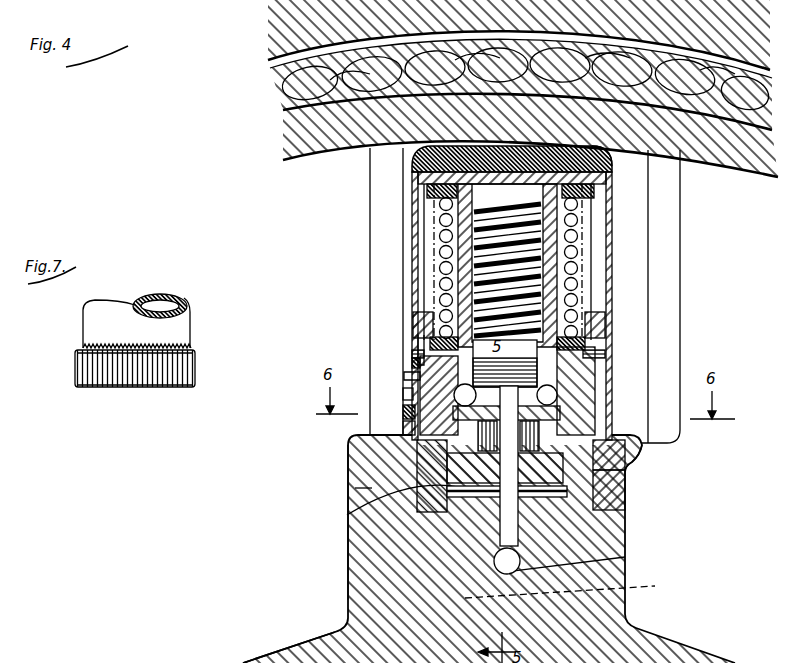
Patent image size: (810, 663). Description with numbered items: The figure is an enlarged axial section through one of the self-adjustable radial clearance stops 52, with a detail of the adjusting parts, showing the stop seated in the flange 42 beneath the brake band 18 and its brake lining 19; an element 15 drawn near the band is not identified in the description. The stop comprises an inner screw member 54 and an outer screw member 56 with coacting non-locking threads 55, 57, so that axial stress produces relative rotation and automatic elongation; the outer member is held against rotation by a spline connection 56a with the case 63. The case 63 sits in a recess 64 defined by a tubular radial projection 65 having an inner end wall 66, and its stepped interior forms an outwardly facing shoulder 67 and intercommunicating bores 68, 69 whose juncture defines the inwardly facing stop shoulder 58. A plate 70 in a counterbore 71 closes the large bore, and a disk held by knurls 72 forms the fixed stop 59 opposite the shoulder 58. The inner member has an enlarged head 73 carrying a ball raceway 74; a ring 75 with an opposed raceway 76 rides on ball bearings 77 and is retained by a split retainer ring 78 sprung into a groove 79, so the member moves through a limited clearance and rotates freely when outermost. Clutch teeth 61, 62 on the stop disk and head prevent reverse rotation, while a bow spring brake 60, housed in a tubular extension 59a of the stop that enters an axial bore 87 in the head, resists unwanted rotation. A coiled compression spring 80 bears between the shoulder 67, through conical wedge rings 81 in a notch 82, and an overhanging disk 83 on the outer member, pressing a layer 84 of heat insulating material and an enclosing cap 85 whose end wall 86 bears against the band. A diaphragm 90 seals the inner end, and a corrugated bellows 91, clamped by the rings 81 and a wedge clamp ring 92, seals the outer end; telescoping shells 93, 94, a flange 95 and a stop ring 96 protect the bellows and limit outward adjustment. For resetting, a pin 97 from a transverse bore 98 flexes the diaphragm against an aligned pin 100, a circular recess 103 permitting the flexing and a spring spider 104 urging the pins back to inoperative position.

In FIG. 4, the tire 15 is at (292, 22).
In FIG. 4, the brake band 18 is at (306, 136).
In FIG. 4, the brake lining 19 is at (317, 96).
In FIG. 4, the flange 42 is at (325, 640).
In FIG. 4, the radial clearance stop 52 is at (630, 257).
In FIG. 4, the inner screw member 54 is at (608, 362).
In FIG. 4, the non-locking thread 55 is at (580, 307).
In FIG. 4, the outer screw member 56 is at (607, 212).
In FIG. 4, the spline connection 56a is at (410, 345).
In FIG. 4, the non-locking thread 57 is at (593, 287).
In FIG. 4, the stop shoulder 58 is at (605, 376).
In FIG. 4, the stop 59 is at (420, 504).
In FIG. 7, the stop 59 is at (92, 390).
In FIG. 4, the tubular extension 59a is at (648, 462).
In FIG. 4, the brake 60 is at (412, 433).
In FIG. 7, the clutch teeth 61 is at (160, 346).
In FIG. 4, the clutch teeth 62 is at (400, 452).
In FIG. 7, the clutch teeth 62 is at (196, 355).
In FIG. 4, the case 63 is at (632, 490).
In FIG. 4, the recess 64 is at (628, 468).
In FIG. 4, the tubular radial projection 65 is at (413, 462).
In FIG. 4, the inner end wall 66 is at (570, 587).
In FIG. 4, the shoulder 67 is at (410, 330).
In FIG. 4, the bore 68 is at (610, 448).
In FIG. 4, the bore 69 is at (604, 306).
In FIG. 4, the plate 70 is at (447, 508).
In FIG. 4, the counterbore 71 is at (615, 518).
In FIG. 4, the knurls 72 is at (355, 488).
In FIG. 7, the knurls 72 is at (196, 380).
In FIG. 4, the head 73 is at (645, 441).
In FIG. 7, the head 73 is at (96, 323).
In FIG. 4, the ball raceway 74 is at (410, 421).
In FIG. 4, the ring 75 is at (605, 392).
In FIG. 4, the raceway 76 is at (603, 406).
In FIG. 4, the ball bearings 77 is at (590, 423).
In FIG. 4, the split retainer ring 78 is at (418, 360).
In FIG. 4, the annular groove 79 is at (420, 379).
In FIG. 4, the coiled compression spring 80 is at (470, 246).
In FIG. 4, the conical wedge rings 81 is at (405, 340).
In FIG. 4, the annular notch 82 is at (415, 352).
In FIG. 4, the disk 83 is at (445, 178).
In FIG. 4, the layer of heat insulating material 84 is at (440, 148).
In FIG. 4, the cap 85 is at (625, 230).
In FIG. 4, the end wall 86 is at (607, 157).
In FIG. 4, the axial bore 87 is at (347, 440).
In FIG. 4, the diaphragm 90 is at (483, 490).
In FIG. 4, the bellows 91 is at (455, 207).
In FIG. 4, the wedge clamp ring 92 is at (445, 193).
In FIG. 4, the shell 93 is at (603, 323).
In FIG. 4, the outer shell 94 is at (607, 337).
In FIG. 4, the inner peripheral flange 95 is at (610, 355).
In FIG. 4, the stop ring 96 is at (410, 399).
In FIG. 4, the pin 97 is at (625, 540).
In FIG. 4, the transverse bore 98 is at (625, 560).
In FIG. 4, the pin 100 is at (640, 470).
In FIG. 4, the circular recess 103 is at (625, 508).
In FIG. 4, the spring spider 104 is at (455, 515).